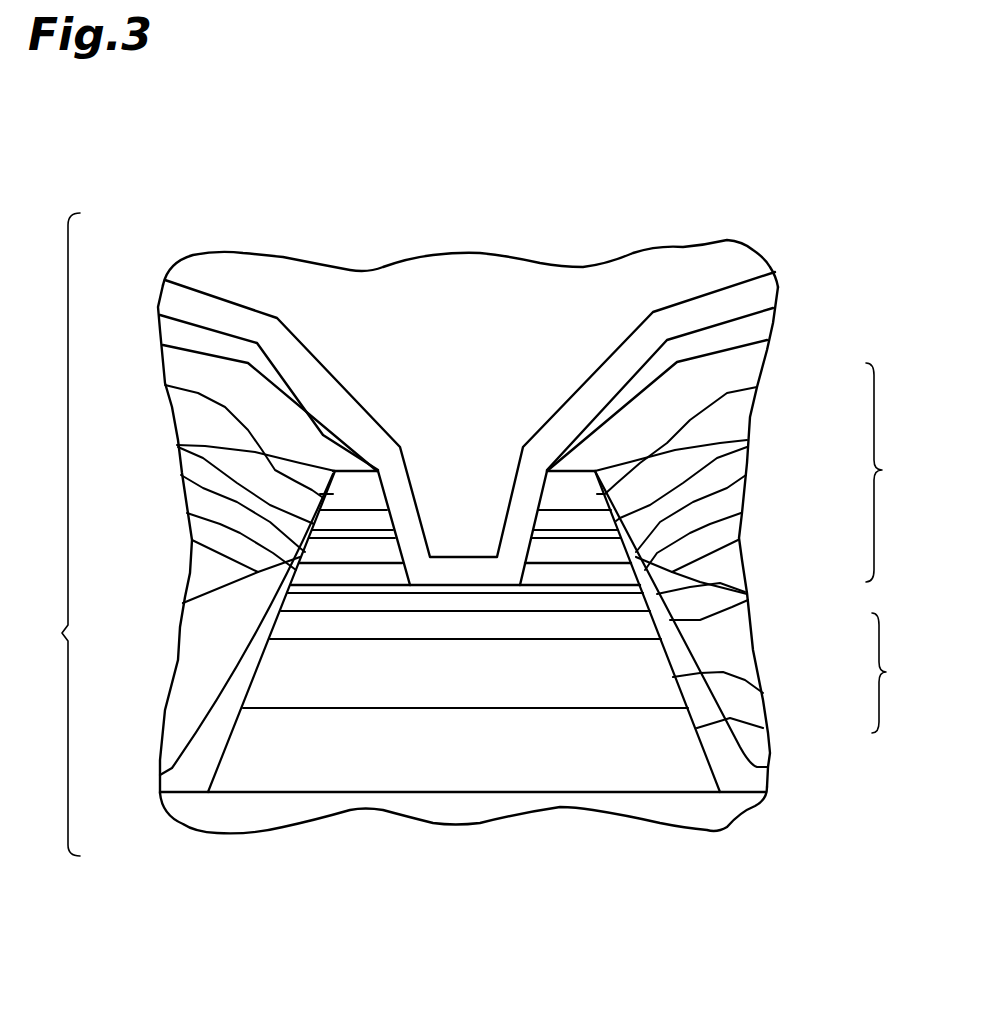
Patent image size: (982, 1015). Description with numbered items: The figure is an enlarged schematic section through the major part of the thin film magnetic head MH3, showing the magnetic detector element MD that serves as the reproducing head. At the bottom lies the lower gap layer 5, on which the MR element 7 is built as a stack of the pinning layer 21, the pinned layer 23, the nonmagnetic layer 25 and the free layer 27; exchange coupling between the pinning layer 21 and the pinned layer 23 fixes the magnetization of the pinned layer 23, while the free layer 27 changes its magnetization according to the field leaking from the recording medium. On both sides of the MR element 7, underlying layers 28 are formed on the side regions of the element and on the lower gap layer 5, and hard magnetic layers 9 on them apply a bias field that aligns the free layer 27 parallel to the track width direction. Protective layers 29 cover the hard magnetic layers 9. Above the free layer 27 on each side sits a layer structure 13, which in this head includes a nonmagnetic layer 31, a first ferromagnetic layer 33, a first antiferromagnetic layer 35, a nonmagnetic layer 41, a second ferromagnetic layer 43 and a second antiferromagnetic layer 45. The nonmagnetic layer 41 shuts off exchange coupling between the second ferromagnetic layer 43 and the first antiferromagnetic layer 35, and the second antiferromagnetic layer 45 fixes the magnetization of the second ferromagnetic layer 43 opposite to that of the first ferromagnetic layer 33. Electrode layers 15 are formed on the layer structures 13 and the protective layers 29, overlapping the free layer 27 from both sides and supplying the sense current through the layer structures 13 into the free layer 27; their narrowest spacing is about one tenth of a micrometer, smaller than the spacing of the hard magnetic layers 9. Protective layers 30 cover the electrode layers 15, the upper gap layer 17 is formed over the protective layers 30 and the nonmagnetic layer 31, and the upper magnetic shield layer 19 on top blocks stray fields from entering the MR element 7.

The lower gap layer 5 is at (757, 806).
The MR element 7 is at (890, 673).
The hard magnetic layers 9 is at (160, 758).
The layer structures 13 is at (894, 472).
The electrode layers 15 is at (163, 352).
The upper gap layer 17 is at (773, 290).
The upper magnetic shield layer 19 is at (757, 250).
The pinning layer 21 is at (767, 727).
The pinned layer 23 is at (762, 694).
The nonmagnetic layer 25 is at (754, 660).
The free layer 27 is at (751, 632).
The underlying layer 28 is at (163, 795).
The protective layers 29 is at (183, 603).
The protective layers 30 is at (160, 320).
The nonmagnetic layer 31 is at (743, 580).
The first ferromagnetic layer 33 is at (192, 541).
The first antiferromagnetic layer 35 is at (187, 513).
The nonmagnetic layer 41 is at (181, 474).
The second ferromagnetic layer 43 is at (177, 445).
The second antiferromagnetic layer 45 is at (165, 385).
The magnetic detector element MD is at (49, 534).
The thin film magnetic head MH3 is at (736, 193).